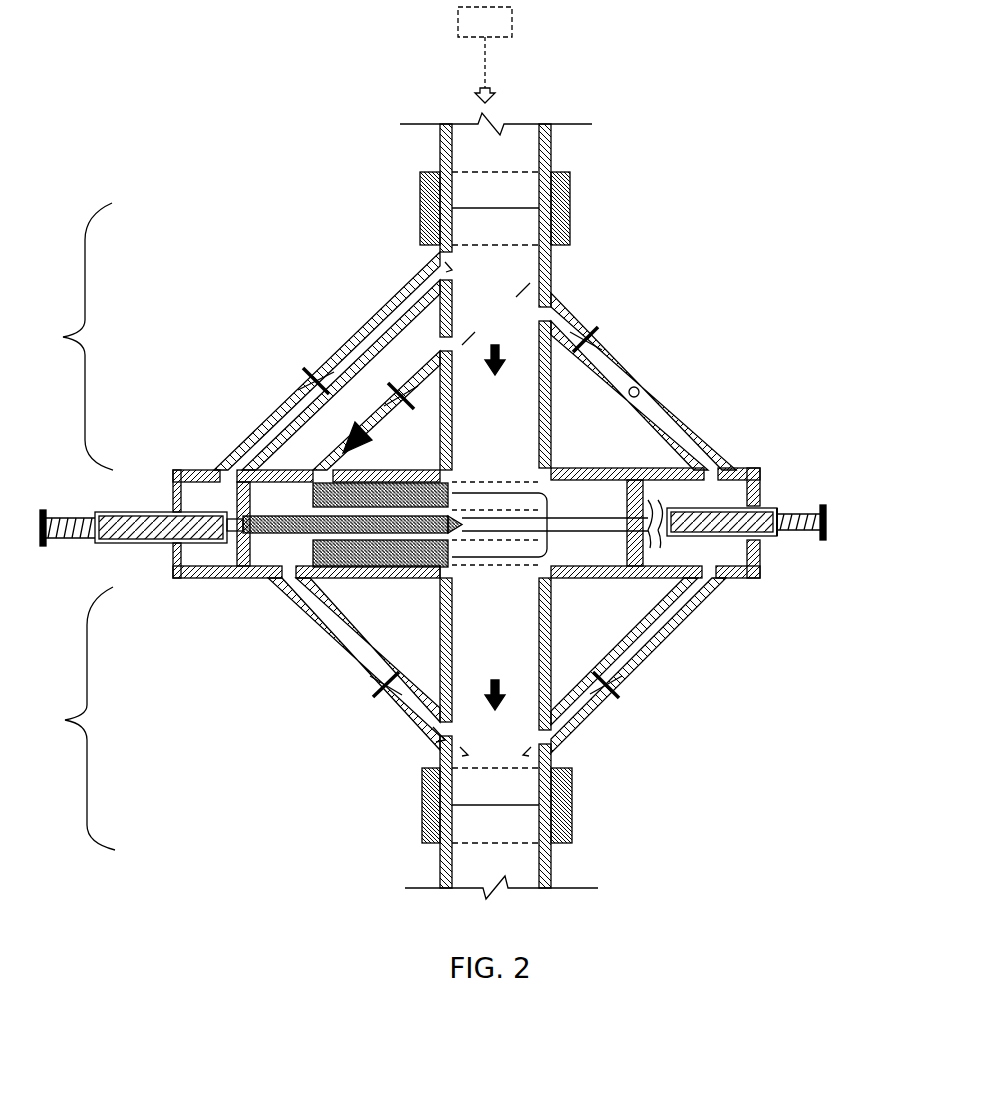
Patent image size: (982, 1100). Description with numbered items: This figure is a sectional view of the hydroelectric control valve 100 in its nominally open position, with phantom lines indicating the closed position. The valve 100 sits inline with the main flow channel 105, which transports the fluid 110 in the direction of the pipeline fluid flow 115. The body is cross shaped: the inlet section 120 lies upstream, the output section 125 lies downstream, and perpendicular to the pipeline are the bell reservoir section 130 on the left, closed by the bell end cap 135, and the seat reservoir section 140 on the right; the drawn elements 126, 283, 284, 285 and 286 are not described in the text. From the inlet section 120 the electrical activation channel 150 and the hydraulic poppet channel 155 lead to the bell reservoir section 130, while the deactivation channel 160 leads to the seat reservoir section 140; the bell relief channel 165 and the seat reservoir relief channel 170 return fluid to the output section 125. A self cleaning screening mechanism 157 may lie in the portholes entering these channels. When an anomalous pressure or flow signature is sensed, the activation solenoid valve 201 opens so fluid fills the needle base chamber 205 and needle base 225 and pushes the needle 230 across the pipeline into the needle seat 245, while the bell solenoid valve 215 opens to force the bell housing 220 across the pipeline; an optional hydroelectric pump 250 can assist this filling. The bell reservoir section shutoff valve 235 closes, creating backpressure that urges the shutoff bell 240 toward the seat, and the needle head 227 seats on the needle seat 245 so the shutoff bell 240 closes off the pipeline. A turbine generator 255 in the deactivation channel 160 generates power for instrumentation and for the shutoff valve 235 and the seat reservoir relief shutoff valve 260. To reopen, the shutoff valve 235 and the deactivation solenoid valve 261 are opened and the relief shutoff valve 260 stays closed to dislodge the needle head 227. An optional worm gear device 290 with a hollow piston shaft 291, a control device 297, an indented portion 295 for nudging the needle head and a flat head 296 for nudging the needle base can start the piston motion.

The hydroelectric control valve 100 is at (553, 911).
The main flow channel 105 is at (546, 500).
The fluid 110 is at (485, 55).
The pipeline fluid flow 115 is at (572, 496).
The inlet section 120 is at (69, 336).
The output section 125 is at (73, 718).
The lower conduit junction 126 is at (353, 756).
The bell reservoir section 130 is at (167, 510).
The bell end cap 135 is at (303, 593).
The seat reservoir section 140 is at (745, 582).
The electrical activation channel 150 is at (321, 334).
The hydraulic poppet channel 155 is at (307, 410).
The self cleaning screening mechanism 157 is at (433, 257).
The deactivation channel 160 is at (676, 381).
The bell relief channel 165 is at (329, 664).
The seat reservoir relief channel 170 is at (661, 665).
The activation solenoid valve 201 is at (254, 362).
The needle base chamber 205 is at (145, 514).
The bell solenoid valve 215 is at (315, 361).
The bell housing 220 is at (293, 469).
The needle base 225 is at (188, 543).
The needle head 227 is at (757, 464).
The needle 230 is at (639, 480).
The bell reservoir section shutoff valve 235 is at (322, 685).
The shutoff bell 240 is at (480, 568).
The needle seat 245 is at (747, 521).
The hydroelectric pump 250 is at (273, 403).
The turbine generator 255 is at (651, 395).
The seat reservoir relief shutoff valve 260 is at (669, 691).
The deactivation solenoid valve 261 is at (658, 331).
The piston block 283 is at (380, 504).
The housing upper right plate 284 is at (627, 453).
The housing lower left corner 285 is at (397, 592).
The housing lower right plate 286 is at (626, 593).
The worm gear device 290 is at (757, 539).
The hollow piston shaft 291 is at (796, 550).
The indented portion 295 is at (665, 530).
The flat head 296 is at (132, 541).
The manual, automatic, or remote control device 297 is at (828, 522).